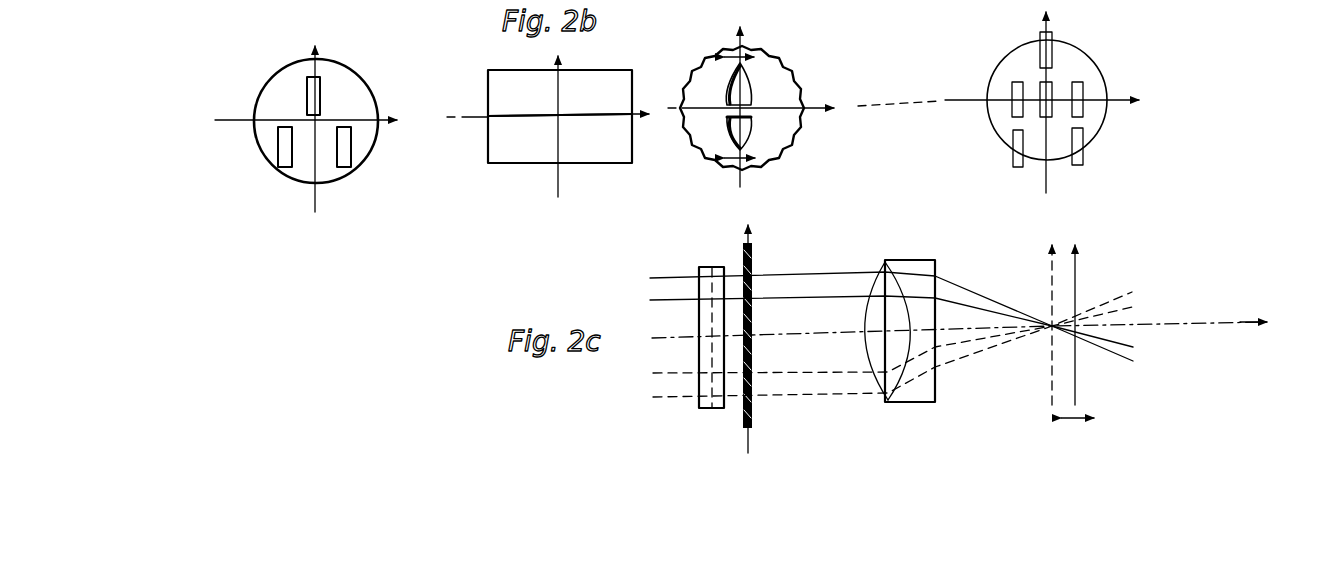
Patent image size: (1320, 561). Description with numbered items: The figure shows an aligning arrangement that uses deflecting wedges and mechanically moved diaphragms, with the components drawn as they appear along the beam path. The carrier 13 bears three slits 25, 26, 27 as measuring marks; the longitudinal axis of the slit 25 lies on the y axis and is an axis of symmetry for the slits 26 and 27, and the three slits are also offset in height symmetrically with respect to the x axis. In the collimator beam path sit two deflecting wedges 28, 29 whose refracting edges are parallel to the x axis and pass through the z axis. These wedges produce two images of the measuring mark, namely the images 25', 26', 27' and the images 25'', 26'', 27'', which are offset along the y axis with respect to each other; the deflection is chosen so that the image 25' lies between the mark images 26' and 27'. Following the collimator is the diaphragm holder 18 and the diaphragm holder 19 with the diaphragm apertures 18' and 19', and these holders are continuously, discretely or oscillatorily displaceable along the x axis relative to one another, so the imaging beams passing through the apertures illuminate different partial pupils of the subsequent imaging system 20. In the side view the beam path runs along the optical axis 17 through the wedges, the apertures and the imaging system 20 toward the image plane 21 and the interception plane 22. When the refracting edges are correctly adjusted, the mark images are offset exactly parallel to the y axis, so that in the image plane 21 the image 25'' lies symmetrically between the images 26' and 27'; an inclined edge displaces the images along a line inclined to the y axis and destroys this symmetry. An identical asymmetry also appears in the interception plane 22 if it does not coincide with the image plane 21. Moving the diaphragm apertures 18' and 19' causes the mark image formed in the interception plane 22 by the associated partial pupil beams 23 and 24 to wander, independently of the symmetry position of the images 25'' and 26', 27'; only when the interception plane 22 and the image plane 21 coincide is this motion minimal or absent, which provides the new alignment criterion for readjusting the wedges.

In FIG. 2B, the carrier 13 is at (273, 90).
In FIG. 2B, the slit 25 is at (356, 88).
In FIG. 2B, the slit 26 is at (251, 149).
In FIG. 2B, the slit 27 is at (373, 149).
In FIG. 2B, the deflecting wedge 28 is at (507, 90).
In FIG. 2C, the deflecting wedge 28 is at (673, 323).
In FIG. 2B, the deflecting wedge 29 is at (527, 150).
In FIG. 2B, the diaphragm holder 18 is at (804, 100).
In FIG. 2C, the diaphragm holder 18 is at (764, 335).
In FIG. 2B, the diaphragm aperture 18' is at (774, 70).
In FIG. 2C, the diaphragm aperture 18' is at (780, 265).
In FIG. 2B, the diaphragm holder 19 is at (807, 135).
In FIG. 2C, the diaphragm holder 19 is at (779, 434).
In FIG. 2B, the diaphragm aperture 19' is at (777, 147).
In FIG. 2C, the diaphragm aperture 19' is at (781, 405).
In FIG. 2B, the image of the measuring mark 25' is at (1054, 102).
In FIG. 2B, the image of the measuring mark 25'' is at (1090, 76).
In FIG. 2B, the image of the measuring mark 26' is at (983, 95).
In FIG. 2B, the image of the measuring mark 26'' is at (985, 152).
In FIG. 2B, the image of the measuring mark 27' is at (1115, 88).
In FIG. 2B, the image of the measuring mark 27'' is at (1110, 149).
In FIG. 2C, the imaging system 20 is at (915, 392).
In FIG. 2C, the partial pupil beam 23 is at (968, 305).
In FIG. 2C, the partial pupil beam 24 is at (973, 353).
In FIG. 2C, the image plane 21 is at (1050, 262).
In FIG. 2C, the interception plane 22 is at (1077, 259).
In FIG. 2C, the optical axis 17 is at (1205, 323).